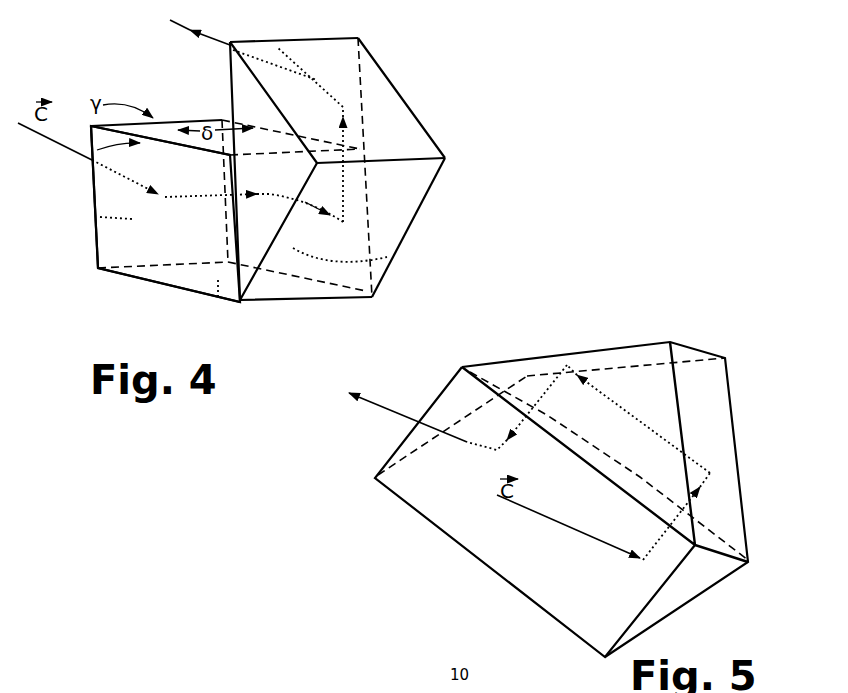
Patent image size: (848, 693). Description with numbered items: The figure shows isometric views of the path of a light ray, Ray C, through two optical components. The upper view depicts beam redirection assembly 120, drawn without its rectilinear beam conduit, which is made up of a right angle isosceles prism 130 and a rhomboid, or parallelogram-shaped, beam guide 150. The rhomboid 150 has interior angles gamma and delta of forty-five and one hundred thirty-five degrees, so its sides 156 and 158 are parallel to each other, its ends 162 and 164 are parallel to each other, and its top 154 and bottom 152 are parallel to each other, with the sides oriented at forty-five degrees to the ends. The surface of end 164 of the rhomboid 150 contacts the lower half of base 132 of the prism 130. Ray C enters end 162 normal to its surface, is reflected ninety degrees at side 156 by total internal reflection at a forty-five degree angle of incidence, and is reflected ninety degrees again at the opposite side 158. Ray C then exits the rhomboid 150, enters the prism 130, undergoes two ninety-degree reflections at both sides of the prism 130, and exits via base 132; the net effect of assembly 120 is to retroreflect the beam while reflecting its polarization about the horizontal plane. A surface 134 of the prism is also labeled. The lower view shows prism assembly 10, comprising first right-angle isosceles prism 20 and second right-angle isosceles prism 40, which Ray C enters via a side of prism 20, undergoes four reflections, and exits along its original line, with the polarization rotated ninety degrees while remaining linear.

In FIG. 5, the prism assembly 10 is at (588, 334).
In FIG. 5, the first right-angle isosceles prism 20 is at (458, 541).
In FIG. 5, the second right-angle isosceles prism 40 is at (738, 448).
In FIG. 4, the beam redirection assembly 120 is at (401, 43).
In FIG. 4, the right angle isosceles prism 130 is at (406, 90).
In FIG. 4, the base 132 is at (275, 40).
In FIG. 4, the bottom face 134 is at (393, 163).
In FIG. 4, the rhomboid beam guide 150 is at (143, 286).
In FIG. 4, the bottom 152 is at (217, 297).
In FIG. 4, the top 154 is at (163, 132).
In FIG. 4, the side 156 is at (112, 247).
In FIG. 4, the side 158 is at (393, 257).
In FIG. 4, the end 162 is at (93, 218).
In FIG. 4, the end 164 is at (293, 248).